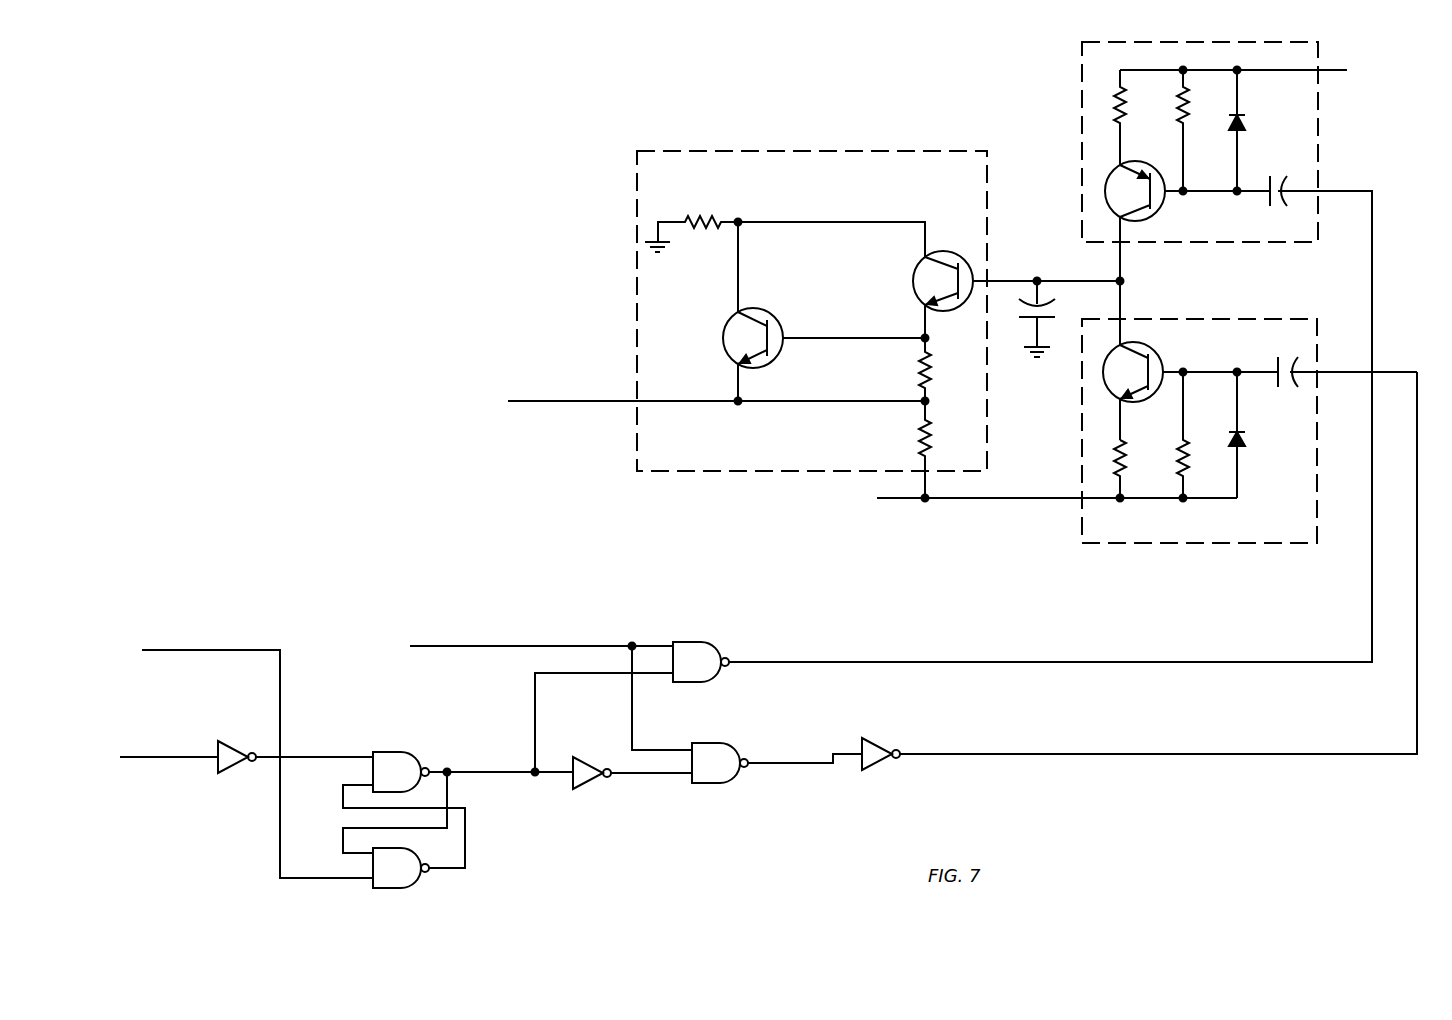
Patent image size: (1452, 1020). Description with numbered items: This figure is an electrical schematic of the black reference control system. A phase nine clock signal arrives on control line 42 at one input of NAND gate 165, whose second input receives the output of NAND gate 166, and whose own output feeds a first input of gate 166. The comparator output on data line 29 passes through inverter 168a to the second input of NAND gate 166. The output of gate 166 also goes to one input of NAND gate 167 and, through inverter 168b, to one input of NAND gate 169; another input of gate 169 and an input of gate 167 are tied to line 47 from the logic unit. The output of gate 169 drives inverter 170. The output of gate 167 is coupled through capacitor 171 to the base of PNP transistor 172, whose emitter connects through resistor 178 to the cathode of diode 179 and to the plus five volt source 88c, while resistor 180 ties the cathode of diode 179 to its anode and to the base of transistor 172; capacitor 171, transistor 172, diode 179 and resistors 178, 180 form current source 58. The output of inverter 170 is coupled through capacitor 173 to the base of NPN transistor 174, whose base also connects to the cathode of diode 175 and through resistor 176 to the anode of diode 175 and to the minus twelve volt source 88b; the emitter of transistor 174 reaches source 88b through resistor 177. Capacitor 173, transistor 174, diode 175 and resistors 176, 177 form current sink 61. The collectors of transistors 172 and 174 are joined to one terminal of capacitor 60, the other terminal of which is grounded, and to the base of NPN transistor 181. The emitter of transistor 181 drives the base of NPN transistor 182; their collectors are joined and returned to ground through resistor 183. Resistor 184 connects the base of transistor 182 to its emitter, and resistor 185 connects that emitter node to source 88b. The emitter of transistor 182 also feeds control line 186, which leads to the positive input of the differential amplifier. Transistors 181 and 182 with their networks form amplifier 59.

The data line 29 is at (163, 757).
The control line 42 is at (225, 650).
The line 47 is at (530, 646).
The current source 58 is at (1080, 82).
The amplifier 59 is at (795, 150).
The capacitor 60 is at (1022, 318).
The current sink 61 is at (1280, 543).
The −12 volt source 88b is at (1037, 497).
The +5 volt source 88c is at (1252, 70).
The NAND gate 165 is at (405, 880).
The NAND gate 166 is at (400, 760).
The NAND gate 167 is at (710, 655).
The inverter 168a is at (232, 766).
The inverter 168b is at (588, 783).
The NAND gate 169 is at (712, 776).
The inverter 170 is at (875, 750).
The capacitor 171 is at (1272, 176).
The PNP transistor 172 is at (1157, 210).
The capacitor 173 is at (1282, 356).
The NPN transistor 174 is at (1165, 350).
The diode 175 is at (1247, 432).
The resistor 176 is at (1185, 446).
The resistor 177 is at (1125, 448).
The resistor 178 is at (1128, 118).
The diode 179 is at (1245, 120).
The resistor 180 is at (1175, 105).
The NPN transistor 181 is at (912, 273).
The NPN transistor 182 is at (768, 318).
The resistor 183 is at (705, 222).
The resistor 184 is at (915, 372).
The resistor 185 is at (915, 438).
The control line 186 is at (562, 400).